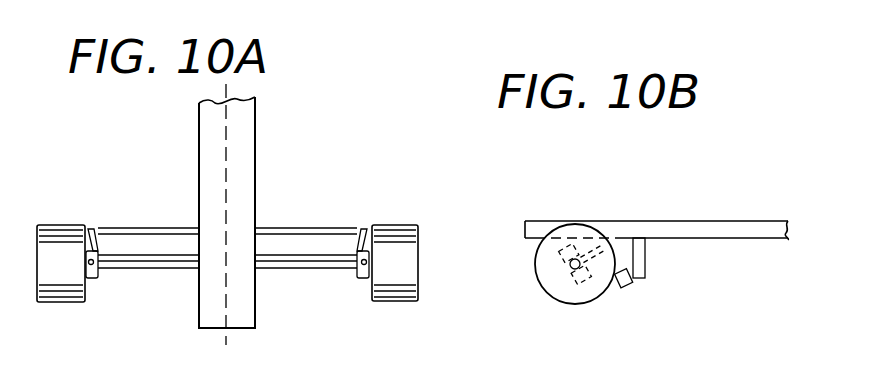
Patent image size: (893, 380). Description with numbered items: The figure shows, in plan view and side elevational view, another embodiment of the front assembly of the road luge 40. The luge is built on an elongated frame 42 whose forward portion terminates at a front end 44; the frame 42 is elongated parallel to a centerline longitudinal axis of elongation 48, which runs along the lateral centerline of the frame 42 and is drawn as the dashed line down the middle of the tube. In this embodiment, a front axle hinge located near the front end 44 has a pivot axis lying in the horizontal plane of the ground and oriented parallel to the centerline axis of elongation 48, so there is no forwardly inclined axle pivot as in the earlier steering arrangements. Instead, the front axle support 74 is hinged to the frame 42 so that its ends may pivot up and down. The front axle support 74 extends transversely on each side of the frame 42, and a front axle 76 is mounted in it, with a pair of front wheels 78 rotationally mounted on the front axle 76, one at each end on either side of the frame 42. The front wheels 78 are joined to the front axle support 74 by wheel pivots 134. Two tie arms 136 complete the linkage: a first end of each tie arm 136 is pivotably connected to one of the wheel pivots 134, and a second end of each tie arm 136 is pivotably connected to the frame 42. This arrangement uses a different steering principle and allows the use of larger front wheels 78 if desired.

In FIG. 10A, the road luge 40 is at (332, 140).
In FIG. 10B, the road luge 40 is at (670, 190).
In FIG. 10A, the frame 42 is at (247, 125).
In FIG. 10B, the frame 42 is at (729, 232).
In FIG. 10A, the front end 44 is at (252, 317).
In FIG. 10B, the front end 44 is at (591, 221).
In FIG. 10A, the centerline longitudinal axis of elongation 48 is at (225, 128).
In FIG. 10A, the front axle support 74 is at (282, 272).
In FIG. 10B, the front axle 76 is at (568, 264).
In FIG. 10A, the front wheels 78 is at (61, 225).
In FIG. 10B, the front wheels 78 is at (562, 303).
In FIG. 10A, the wheel pivots 134 is at (99, 268).
In FIG. 10A, the tie arms 136 is at (166, 227).